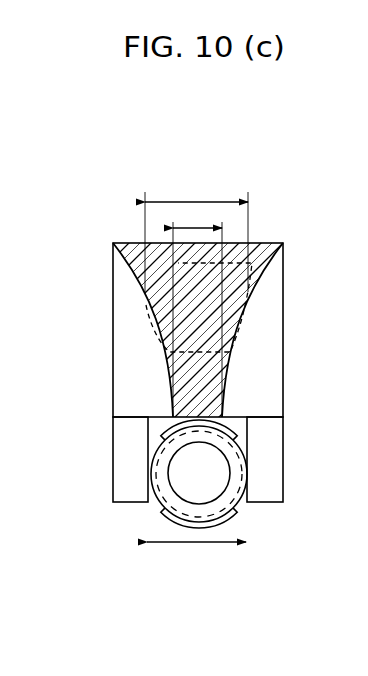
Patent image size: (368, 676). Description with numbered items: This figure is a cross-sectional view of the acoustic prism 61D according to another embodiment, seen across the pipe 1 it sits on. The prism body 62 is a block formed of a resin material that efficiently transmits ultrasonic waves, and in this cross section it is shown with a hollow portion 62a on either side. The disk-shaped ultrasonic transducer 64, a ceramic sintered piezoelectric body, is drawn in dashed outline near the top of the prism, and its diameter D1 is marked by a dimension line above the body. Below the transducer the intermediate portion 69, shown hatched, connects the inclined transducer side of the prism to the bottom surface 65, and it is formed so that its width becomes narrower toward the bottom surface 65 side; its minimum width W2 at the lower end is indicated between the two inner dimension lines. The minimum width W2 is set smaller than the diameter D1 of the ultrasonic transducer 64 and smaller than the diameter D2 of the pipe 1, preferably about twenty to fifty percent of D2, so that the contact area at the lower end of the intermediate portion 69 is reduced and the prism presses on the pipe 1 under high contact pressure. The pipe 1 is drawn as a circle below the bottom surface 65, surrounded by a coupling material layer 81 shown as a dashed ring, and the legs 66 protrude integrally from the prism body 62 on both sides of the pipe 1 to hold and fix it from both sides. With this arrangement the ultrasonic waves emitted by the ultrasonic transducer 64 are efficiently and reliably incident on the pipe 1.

The pipe 1 is at (247, 482).
The acoustic prism 61D is at (135, 503).
The prism body 62 is at (283, 253).
The hollow portion 62a is at (135, 351).
The ultrasonic transducer 64 is at (146, 305).
The bottom surface 65 is at (190, 421).
The leg 66 is at (122, 465).
The intermediate portion 69 is at (190, 385).
The coupling material layer 81 is at (232, 407).
The minimum width of the intermediate portion W2 is at (199, 227).
The diameter of the ultrasonic transducer D1 is at (211, 201).
The diameter of the pipe D2 is at (197, 544).